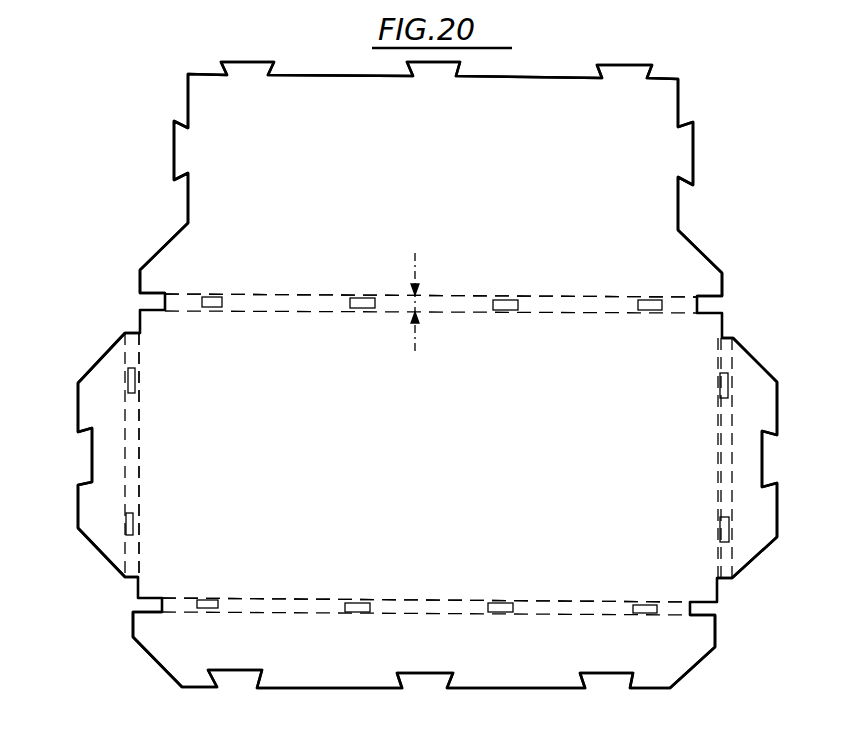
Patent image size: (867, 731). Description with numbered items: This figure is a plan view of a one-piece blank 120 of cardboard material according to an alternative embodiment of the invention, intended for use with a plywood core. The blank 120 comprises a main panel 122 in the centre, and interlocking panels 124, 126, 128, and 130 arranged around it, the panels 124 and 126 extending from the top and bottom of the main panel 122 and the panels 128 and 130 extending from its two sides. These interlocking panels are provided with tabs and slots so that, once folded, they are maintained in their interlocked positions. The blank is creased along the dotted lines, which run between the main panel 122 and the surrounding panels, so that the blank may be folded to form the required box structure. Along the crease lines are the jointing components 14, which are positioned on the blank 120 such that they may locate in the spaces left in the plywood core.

The blank 120 is at (148, 664).
The main panel 122 is at (446, 420).
The interlocking panel 124 is at (450, 171).
The interlocking panel 126 is at (466, 647).
The interlocking panel 128 is at (93, 385).
The interlocking panel 130 is at (747, 547).
The jointing components 14 is at (209, 297).